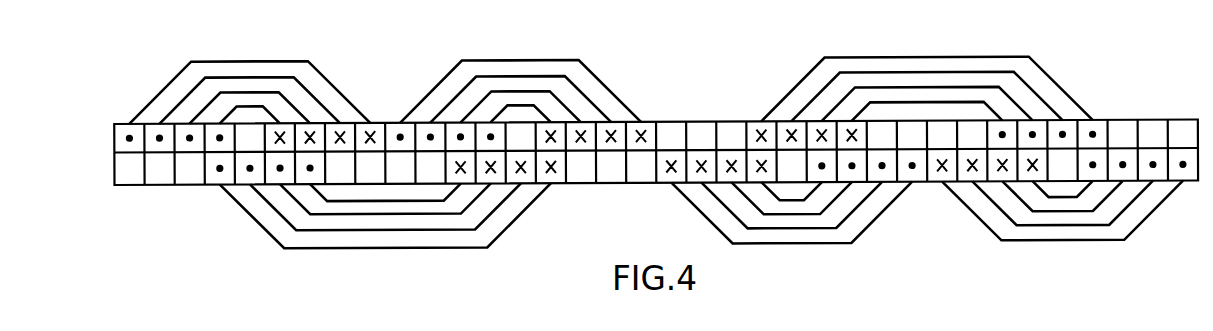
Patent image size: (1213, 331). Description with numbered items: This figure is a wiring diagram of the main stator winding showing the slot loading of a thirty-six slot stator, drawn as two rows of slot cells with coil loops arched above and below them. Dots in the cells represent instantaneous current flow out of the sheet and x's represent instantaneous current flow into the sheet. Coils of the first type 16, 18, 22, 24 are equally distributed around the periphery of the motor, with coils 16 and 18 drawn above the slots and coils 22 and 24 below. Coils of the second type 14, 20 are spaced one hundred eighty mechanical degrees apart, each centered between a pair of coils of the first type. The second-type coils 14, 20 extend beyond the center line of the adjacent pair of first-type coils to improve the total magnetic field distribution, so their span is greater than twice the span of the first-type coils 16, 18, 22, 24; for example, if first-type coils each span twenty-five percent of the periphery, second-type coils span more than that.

The coil of the second type 14 is at (333, 249).
The coil of the first type 16 is at (298, 62).
The coil of the first type 18 is at (568, 62).
The coil of the second type 20 is at (1002, 53).
The coil of the first type 22 is at (832, 244).
The coil of the first type 24 is at (1100, 243).